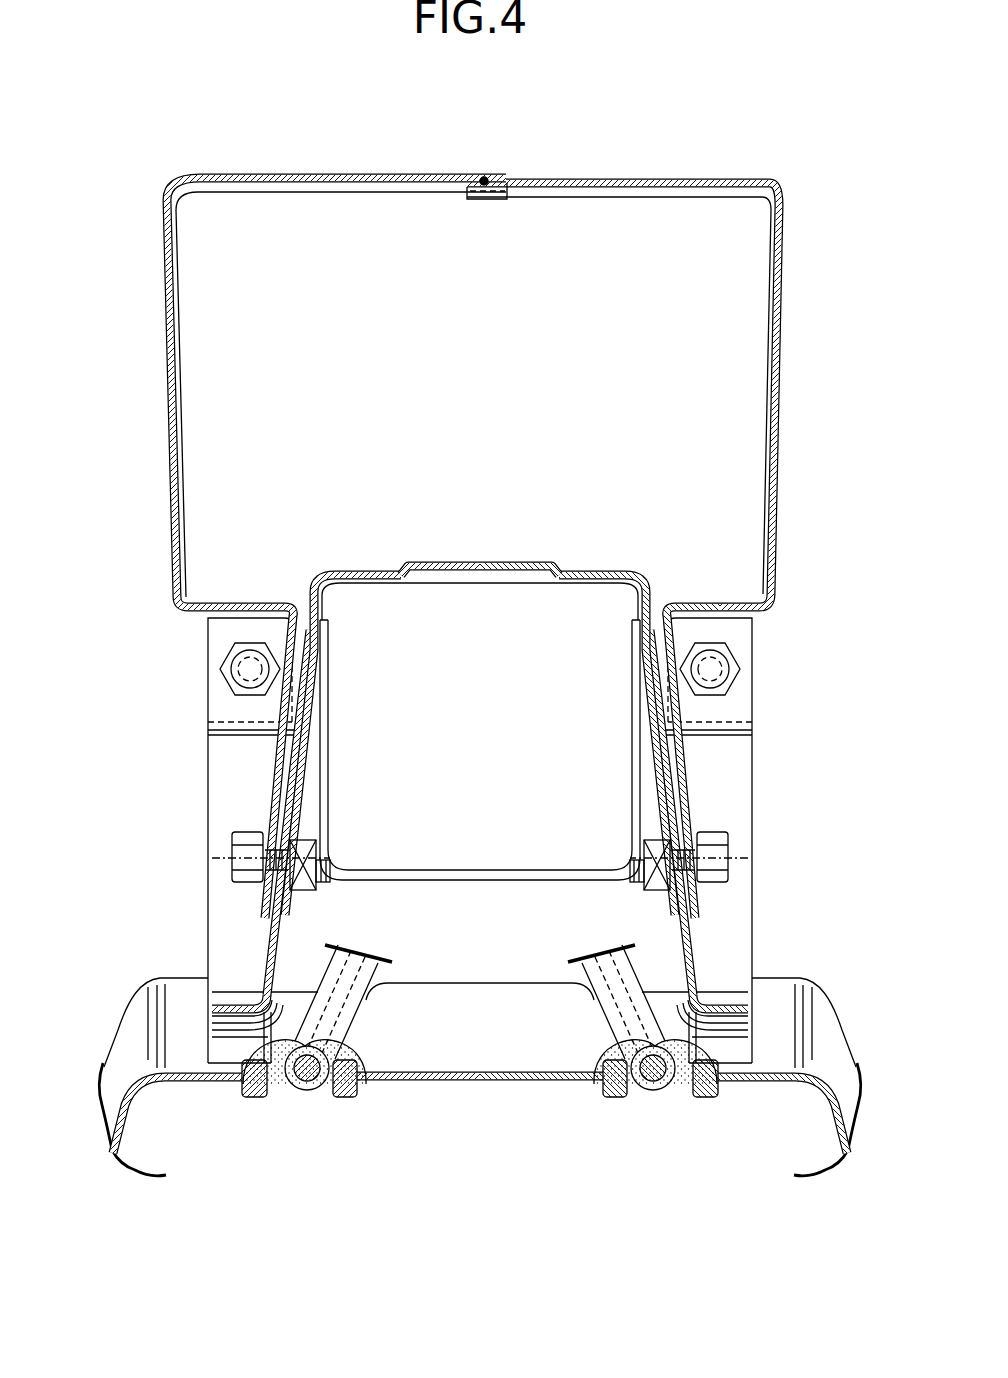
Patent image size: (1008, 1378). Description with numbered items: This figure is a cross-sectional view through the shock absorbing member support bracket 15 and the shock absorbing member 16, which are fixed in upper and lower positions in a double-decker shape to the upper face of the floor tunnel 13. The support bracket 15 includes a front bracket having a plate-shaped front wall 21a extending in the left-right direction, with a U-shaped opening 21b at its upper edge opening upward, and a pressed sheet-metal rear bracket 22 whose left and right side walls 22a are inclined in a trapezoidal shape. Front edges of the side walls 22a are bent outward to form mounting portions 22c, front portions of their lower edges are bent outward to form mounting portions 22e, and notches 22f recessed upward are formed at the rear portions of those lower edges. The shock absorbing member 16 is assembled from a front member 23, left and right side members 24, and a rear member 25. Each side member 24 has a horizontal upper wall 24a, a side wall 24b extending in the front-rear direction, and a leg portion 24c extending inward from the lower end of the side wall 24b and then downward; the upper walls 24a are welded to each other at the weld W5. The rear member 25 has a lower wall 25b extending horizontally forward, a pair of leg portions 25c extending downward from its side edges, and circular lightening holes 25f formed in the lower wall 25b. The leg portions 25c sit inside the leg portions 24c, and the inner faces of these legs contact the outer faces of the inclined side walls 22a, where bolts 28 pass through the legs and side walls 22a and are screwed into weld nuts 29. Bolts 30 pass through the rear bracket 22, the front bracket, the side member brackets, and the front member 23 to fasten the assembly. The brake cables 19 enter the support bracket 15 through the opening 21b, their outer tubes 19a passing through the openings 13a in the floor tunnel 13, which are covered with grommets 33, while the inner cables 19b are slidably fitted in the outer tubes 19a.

The floor tunnel 13 is at (491, 981).
The opening 13a is at (262, 1084).
The shock absorbing member support bracket 15 is at (774, 700).
The shock absorbing member 16 is at (536, 148).
The brake cable 19 is at (372, 992).
The outer tube 19a is at (325, 988).
The inner cable 19b is at (310, 1086).
The front wall 21a is at (530, 890).
The opening 21b is at (430, 874).
The rear bracket 22 is at (762, 896).
The side wall 22a is at (303, 803).
The mounting portion 22c is at (218, 826).
The mounting portion 22e is at (232, 1006).
The notch 22f is at (230, 1040).
The front member 23 is at (461, 393).
The side member 24 is at (268, 172).
The upper wall 24a is at (355, 172).
The side wall 24b is at (162, 378).
The leg portion 24c is at (284, 773).
The rear member 25 is at (587, 562).
The lower wall 25b is at (362, 568).
The leg portion 25c is at (311, 735).
The lightening hole 25f is at (430, 562).
The bolt 28 is at (245, 853).
The weld nut 29 is at (290, 890).
The bolt 30 is at (232, 668).
The grommet 33 is at (362, 1062).
The weld W5 is at (484, 178).